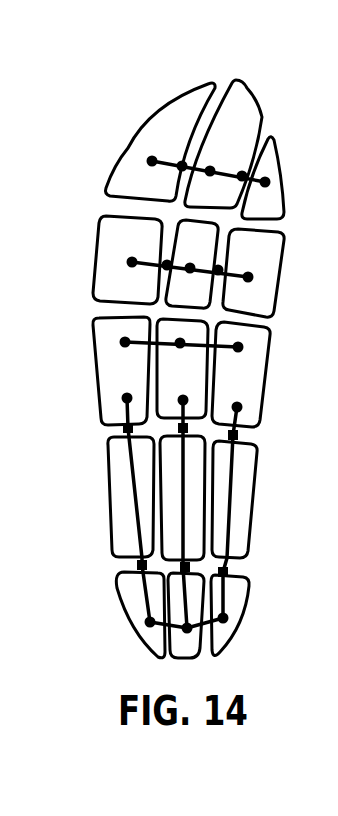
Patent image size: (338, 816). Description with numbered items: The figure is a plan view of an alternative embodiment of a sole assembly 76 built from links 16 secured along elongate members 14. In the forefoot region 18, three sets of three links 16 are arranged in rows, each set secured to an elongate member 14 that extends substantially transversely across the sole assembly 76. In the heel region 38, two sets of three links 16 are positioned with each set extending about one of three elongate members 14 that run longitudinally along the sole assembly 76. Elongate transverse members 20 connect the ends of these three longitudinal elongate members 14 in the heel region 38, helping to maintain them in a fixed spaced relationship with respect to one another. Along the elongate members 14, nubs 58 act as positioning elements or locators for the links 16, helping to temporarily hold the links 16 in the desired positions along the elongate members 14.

The elongate member 14 is at (167, 158).
The link 16 is at (92, 282).
The forefoot region 18 is at (112, 164).
The elongate transverse member 20 is at (214, 624).
The heel region 38 is at (114, 567).
The nub 58 is at (238, 347).
The sole assembly 76 is at (226, 79).